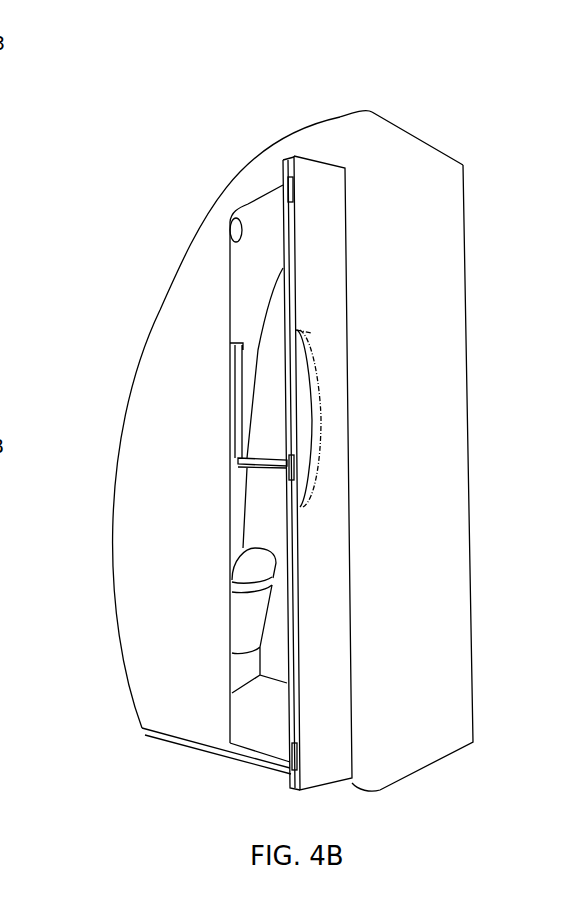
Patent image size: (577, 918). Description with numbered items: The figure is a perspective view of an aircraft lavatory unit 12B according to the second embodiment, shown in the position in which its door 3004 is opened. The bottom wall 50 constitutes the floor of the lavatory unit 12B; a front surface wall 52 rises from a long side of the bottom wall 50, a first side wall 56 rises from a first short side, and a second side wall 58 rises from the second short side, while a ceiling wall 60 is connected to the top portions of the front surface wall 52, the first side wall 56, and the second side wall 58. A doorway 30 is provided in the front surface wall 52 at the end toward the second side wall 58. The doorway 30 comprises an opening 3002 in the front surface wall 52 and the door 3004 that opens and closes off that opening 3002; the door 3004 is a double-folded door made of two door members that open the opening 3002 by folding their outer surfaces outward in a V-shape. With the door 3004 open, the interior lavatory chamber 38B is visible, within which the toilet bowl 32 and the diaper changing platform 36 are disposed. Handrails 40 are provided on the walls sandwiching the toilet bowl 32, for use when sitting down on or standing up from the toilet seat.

The aircraft lavatory unit 12B is at (456, 103).
The ceiling wall 60 is at (328, 119).
The opening 3002 is at (230, 240).
The door 3004 is at (325, 222).
The doorway 30 is at (213, 262).
The diaper changing platform 36 is at (237, 345).
The first side wall 56 is at (145, 352).
The handrails 40 is at (265, 457).
The front surface wall 52 is at (160, 512).
The lavatory chamber 38B is at (285, 531).
The toilet bowl 32 is at (243, 620).
The bottom wall 50 is at (270, 740).
The second side wall 58 is at (430, 487).